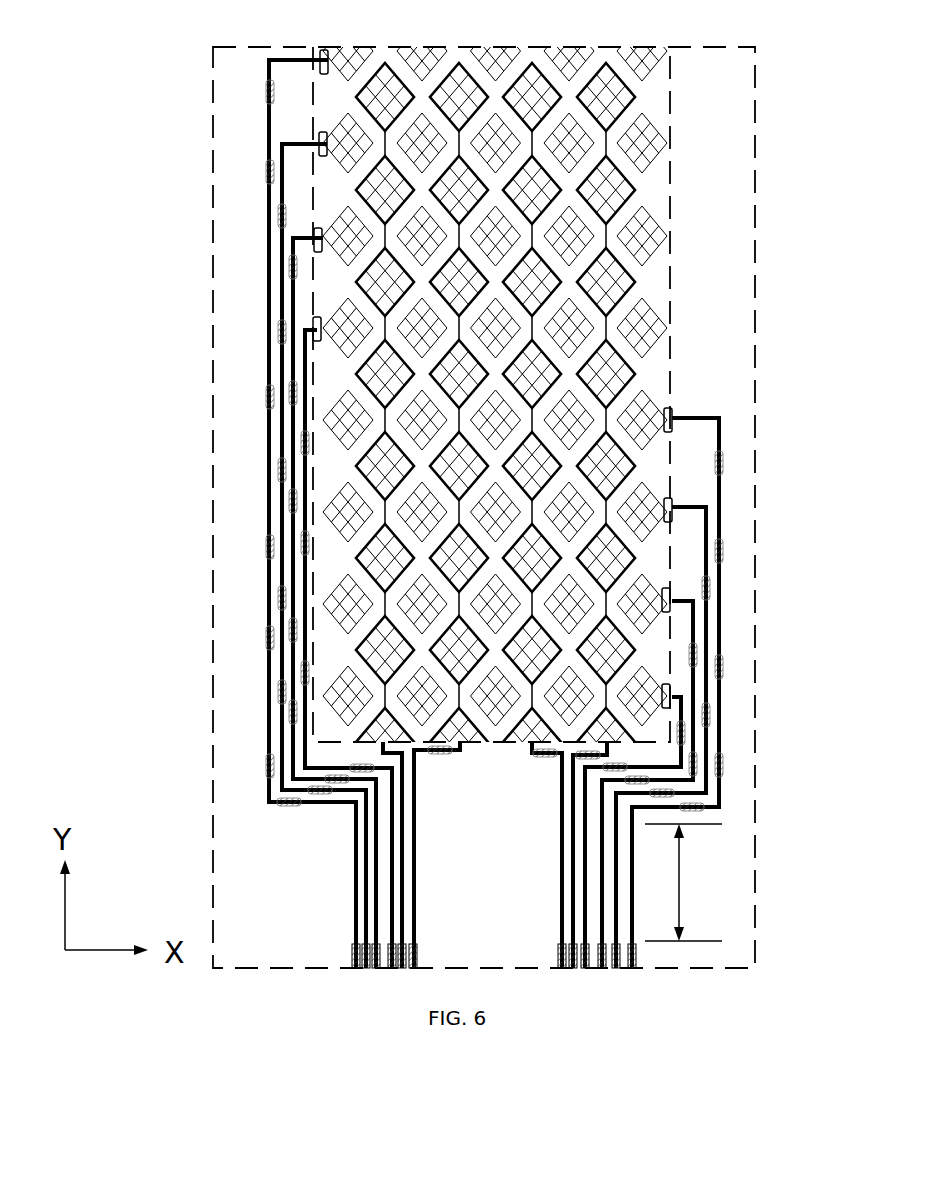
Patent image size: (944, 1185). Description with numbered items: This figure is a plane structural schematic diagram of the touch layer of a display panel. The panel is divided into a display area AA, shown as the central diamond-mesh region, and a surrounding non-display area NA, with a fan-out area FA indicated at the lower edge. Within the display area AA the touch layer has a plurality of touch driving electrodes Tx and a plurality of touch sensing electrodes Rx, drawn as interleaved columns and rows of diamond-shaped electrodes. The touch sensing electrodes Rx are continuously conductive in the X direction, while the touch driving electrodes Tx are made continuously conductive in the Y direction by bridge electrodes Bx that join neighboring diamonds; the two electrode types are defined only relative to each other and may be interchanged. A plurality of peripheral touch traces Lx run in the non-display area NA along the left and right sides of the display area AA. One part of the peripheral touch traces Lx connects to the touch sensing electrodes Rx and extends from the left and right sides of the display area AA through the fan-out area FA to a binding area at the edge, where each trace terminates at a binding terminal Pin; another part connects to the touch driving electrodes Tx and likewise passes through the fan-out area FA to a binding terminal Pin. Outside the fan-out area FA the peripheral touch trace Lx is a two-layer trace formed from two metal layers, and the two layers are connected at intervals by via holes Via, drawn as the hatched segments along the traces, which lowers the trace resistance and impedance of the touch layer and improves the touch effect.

The display area AA is at (591, 393).
The non-display area NA is at (484, 489).
The touch sensing electrode Rx is at (665, 138).
The bridge electrode Bx is at (610, 235).
The touch driving electrode Tx is at (612, 372).
The peripheral touch trace Lx is at (718, 620).
The via hole Via is at (270, 560).
The binding terminal Pin is at (354, 960).
The fan-out area FA is at (684, 882).